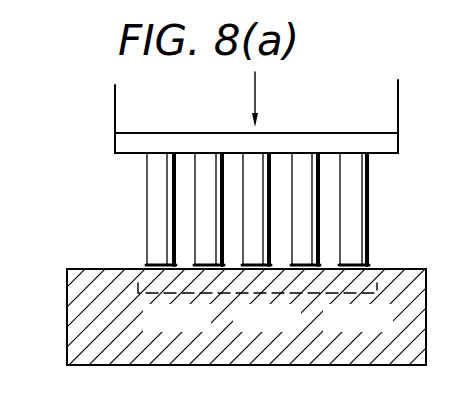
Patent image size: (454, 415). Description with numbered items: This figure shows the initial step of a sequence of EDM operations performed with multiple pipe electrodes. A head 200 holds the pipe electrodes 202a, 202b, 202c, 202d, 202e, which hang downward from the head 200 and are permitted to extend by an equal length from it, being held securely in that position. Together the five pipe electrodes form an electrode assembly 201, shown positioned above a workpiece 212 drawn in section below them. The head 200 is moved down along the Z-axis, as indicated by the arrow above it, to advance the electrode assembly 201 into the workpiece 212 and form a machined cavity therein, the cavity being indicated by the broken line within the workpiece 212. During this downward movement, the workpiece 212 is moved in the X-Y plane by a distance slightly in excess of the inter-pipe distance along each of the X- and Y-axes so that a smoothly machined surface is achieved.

The head 200 is at (123, 115).
The electrode assembly 201 is at (62, 242).
The pipe electrode 202a is at (155, 191).
The pipe electrode 202b is at (206, 255).
The pipe electrode 202c is at (253, 255).
The pipe electrode 202d is at (306, 255).
The pipe electrode 202e is at (370, 262).
The workpiece 212 is at (257, 352).